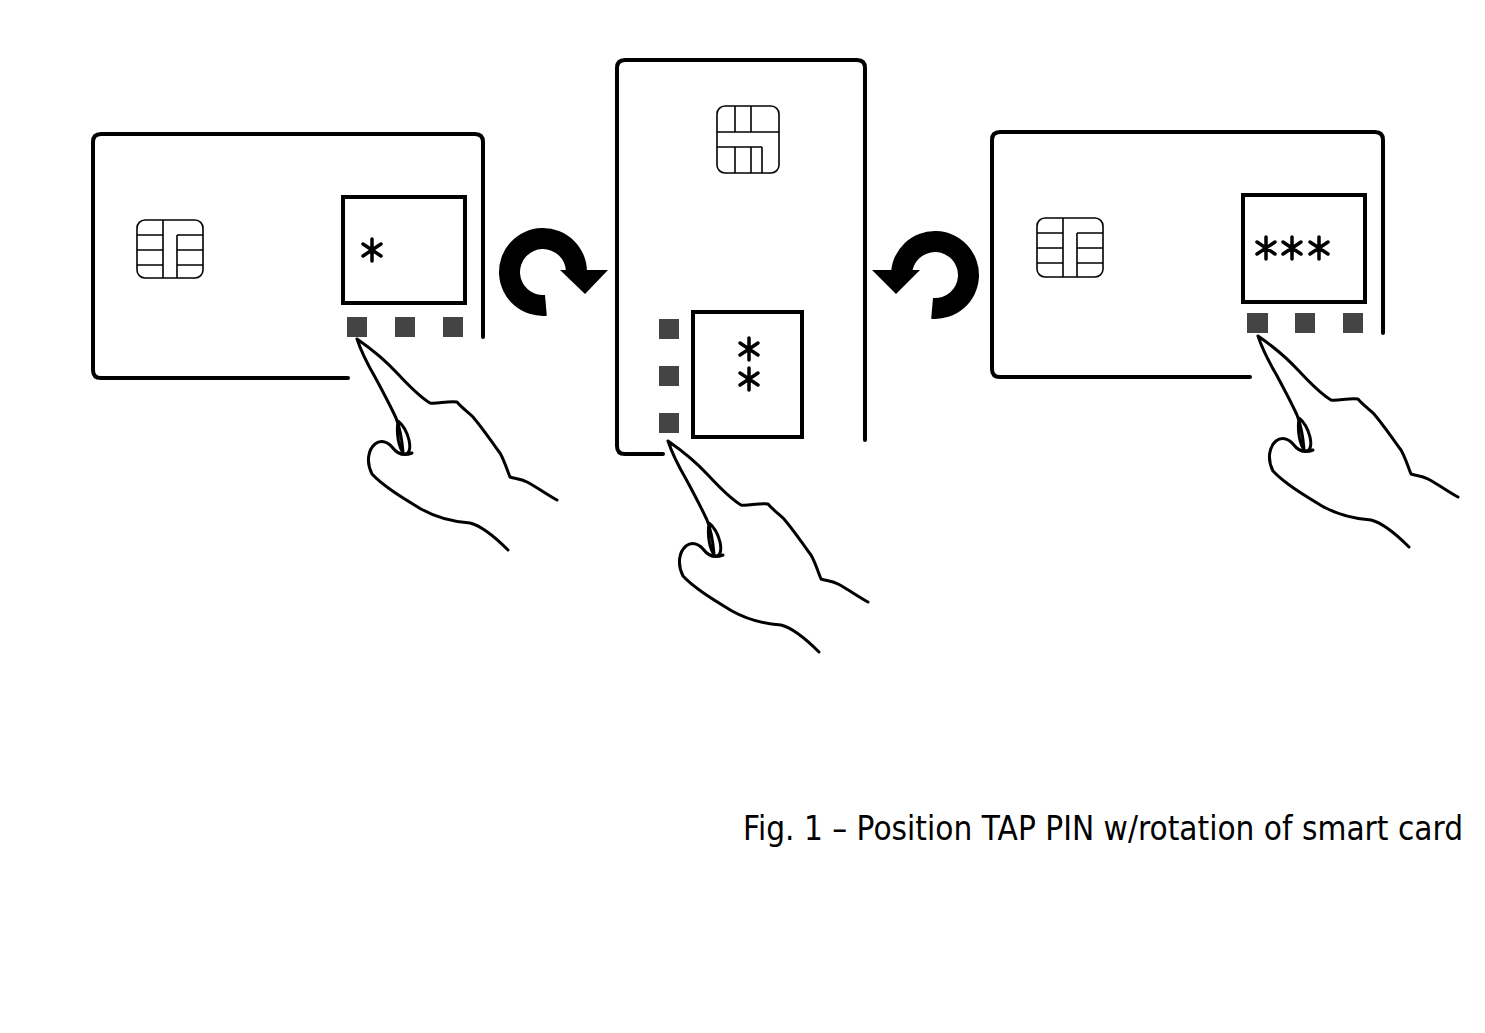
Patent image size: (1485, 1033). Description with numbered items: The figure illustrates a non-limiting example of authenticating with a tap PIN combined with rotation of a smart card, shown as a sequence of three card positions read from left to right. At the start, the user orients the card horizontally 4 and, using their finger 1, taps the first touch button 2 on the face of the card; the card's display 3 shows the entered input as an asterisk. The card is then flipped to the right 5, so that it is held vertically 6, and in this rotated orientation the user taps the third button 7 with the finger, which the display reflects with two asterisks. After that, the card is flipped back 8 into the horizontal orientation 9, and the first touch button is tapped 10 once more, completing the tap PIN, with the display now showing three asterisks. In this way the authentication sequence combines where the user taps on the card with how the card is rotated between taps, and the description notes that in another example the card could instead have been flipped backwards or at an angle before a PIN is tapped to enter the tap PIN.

The finger 1 is at (442, 444).
The first touch button 2 is at (368, 327).
The PIN display showing entered digit 3 is at (404, 250).
The horizontal orientation of the card 4 is at (288, 236).
The flip to the right 5 is at (553, 248).
The vertical orientation of the card 6 is at (741, 238).
The third button 7 is at (655, 419).
The flip back 8 is at (925, 256).
The horizontal orientation after flipping back 9 is at (1187, 232).
The tap of the first touch button 10 is at (1229, 321).